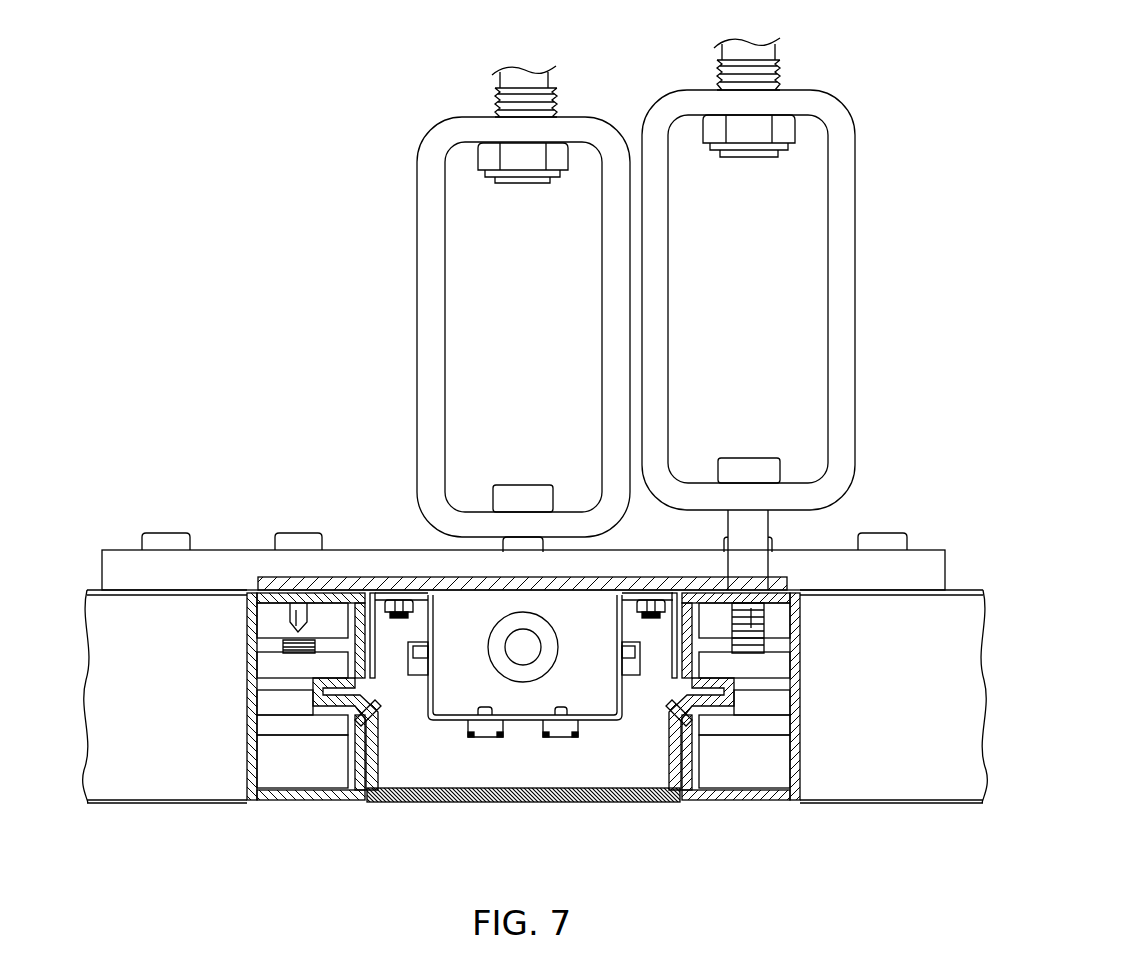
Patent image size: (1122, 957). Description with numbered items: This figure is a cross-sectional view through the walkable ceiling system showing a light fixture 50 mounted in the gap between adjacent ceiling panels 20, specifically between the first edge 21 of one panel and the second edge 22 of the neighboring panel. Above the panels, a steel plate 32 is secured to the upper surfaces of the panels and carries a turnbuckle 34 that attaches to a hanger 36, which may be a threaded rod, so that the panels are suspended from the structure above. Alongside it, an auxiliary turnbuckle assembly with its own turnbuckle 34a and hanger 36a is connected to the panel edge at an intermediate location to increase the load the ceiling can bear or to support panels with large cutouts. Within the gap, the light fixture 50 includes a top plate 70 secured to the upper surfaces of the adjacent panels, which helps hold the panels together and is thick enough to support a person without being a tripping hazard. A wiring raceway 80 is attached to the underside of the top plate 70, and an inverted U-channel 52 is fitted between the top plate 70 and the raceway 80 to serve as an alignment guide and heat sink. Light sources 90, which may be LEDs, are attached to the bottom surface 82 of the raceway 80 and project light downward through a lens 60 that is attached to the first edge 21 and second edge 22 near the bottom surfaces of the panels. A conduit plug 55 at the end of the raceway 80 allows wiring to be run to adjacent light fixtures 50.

The ceiling panel 20 is at (155, 773).
The first edge 21 is at (693, 762).
The second edge 22 is at (350, 765).
The steel plate 32 is at (120, 568).
The turnbuckle 34 is at (420, 298).
The turnbuckle 34a is at (853, 298).
The hanger 36 is at (550, 82).
The hanger 36a is at (778, 58).
The light fixture 50 is at (450, 835).
The inverted U-channel 52 is at (372, 645).
The conduit plug 55 is at (535, 641).
The lens 60 is at (598, 803).
The top plate 70 is at (262, 578).
The wiring raceway 80 is at (433, 622).
The bottom surface 82 is at (447, 722).
The light sources 90 is at (518, 748).